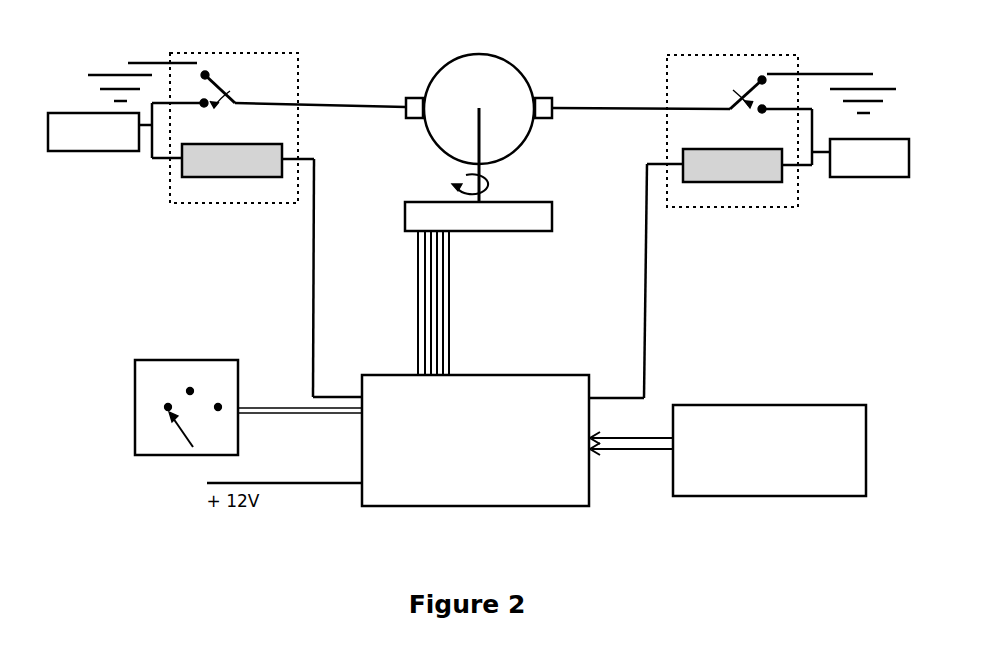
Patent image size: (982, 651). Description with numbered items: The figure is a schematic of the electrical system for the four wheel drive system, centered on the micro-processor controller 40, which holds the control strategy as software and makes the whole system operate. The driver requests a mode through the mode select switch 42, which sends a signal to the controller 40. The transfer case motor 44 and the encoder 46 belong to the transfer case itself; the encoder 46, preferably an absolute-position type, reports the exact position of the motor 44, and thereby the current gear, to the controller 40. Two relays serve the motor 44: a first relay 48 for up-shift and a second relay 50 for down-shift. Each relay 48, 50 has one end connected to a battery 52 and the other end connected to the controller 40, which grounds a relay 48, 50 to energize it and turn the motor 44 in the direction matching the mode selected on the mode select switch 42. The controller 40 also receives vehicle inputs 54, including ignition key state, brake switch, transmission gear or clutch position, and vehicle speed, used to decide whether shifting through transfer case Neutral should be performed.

The micro-processor controller 40 is at (475, 440).
The mode select switch 42 is at (210, 372).
The transfer case motor 44 is at (479, 128).
The encoder 46 is at (478, 288).
The first relay 48 is at (187, 205).
The second relay 50 is at (675, 210).
The battery 52 is at (62, 152).
The vehicle inputs 54 is at (712, 418).